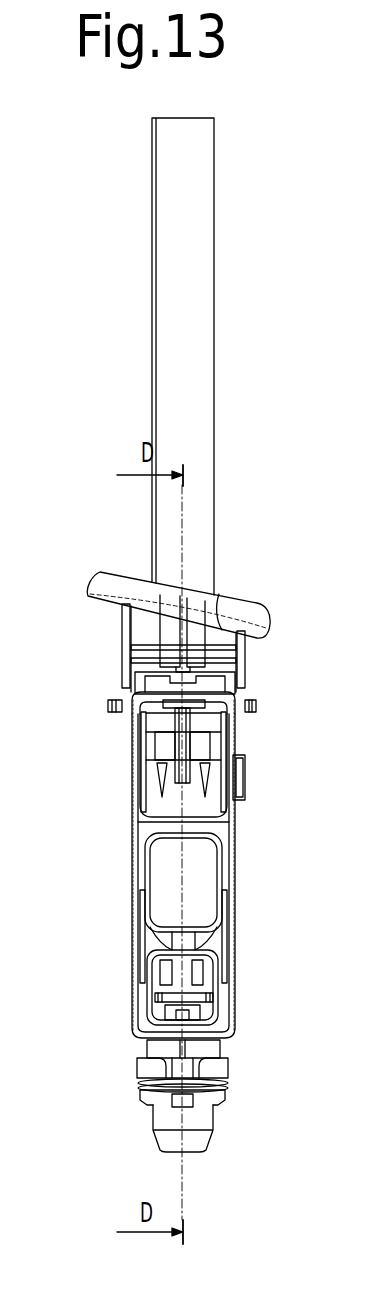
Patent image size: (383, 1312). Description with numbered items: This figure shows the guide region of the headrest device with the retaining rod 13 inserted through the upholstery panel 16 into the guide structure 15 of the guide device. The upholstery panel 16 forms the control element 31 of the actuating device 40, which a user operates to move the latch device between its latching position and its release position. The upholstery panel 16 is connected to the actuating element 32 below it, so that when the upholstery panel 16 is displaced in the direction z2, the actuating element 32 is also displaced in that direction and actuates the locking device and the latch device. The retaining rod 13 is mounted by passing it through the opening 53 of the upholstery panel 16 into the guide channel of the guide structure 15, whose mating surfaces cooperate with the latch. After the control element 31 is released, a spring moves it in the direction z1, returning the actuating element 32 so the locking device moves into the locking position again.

The retaining rod 13 is at (166, 256).
The guide structure 15 is at (247, 783).
The upholstery panel 16 is at (118, 583).
The control element 31 is at (244, 606).
The actuating element 32 is at (137, 805).
The actuating device 40 is at (261, 663).
The opening 53 is at (227, 588).